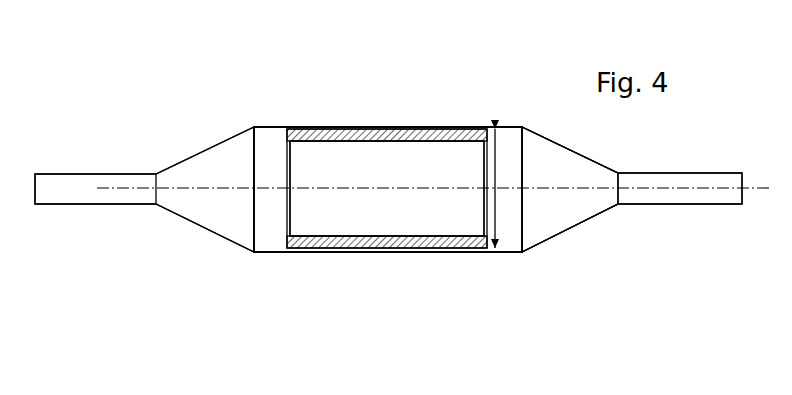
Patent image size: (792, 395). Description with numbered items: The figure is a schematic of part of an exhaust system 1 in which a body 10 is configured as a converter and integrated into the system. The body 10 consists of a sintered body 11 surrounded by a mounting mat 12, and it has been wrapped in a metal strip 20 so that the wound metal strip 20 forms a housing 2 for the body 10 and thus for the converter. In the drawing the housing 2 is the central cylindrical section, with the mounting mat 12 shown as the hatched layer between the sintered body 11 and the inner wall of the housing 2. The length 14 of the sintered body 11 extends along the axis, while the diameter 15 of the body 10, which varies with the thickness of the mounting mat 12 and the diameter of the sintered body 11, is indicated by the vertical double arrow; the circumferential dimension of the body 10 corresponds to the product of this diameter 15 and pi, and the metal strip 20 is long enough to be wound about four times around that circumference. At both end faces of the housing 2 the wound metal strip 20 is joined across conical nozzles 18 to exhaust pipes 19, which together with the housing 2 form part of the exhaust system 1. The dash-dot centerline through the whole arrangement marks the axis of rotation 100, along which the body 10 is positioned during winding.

The exhaust system 1 is at (187, 92).
The housing 2 is at (275, 252).
The metal strip 20 is at (388, 189).
The body 10 is at (278, 149).
The sintered body 11 is at (390, 181).
The mounting mat 12 is at (438, 125).
The length of the sintered body 14 is at (195, 223).
The diameter 15 is at (498, 180).
The nozzle 18 is at (602, 212).
The exhaust pipe 19 is at (78, 205).
The axis of rotation 100 is at (572, 188).